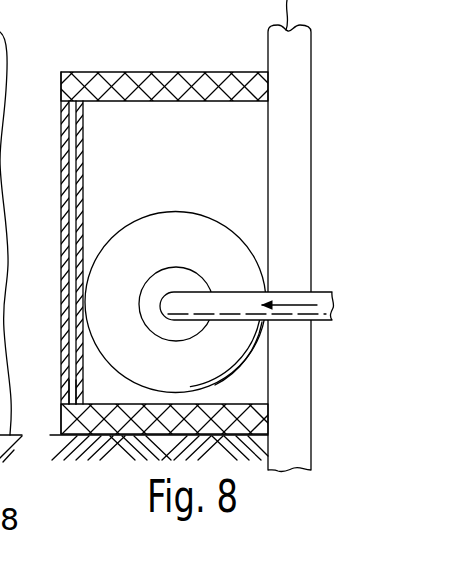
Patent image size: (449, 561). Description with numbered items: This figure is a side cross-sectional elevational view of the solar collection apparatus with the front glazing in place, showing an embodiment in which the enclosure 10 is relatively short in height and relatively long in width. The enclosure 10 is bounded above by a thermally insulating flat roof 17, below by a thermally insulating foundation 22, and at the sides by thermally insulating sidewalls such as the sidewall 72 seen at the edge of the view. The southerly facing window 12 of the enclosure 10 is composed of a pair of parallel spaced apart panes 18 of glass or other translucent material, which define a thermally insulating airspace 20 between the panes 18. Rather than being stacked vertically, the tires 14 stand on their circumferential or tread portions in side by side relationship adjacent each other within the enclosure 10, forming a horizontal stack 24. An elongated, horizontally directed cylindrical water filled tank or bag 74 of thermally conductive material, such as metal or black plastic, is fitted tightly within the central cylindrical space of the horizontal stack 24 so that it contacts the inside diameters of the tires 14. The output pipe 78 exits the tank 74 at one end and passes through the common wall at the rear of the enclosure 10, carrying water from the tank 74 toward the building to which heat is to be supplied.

The enclosure 10 is at (149, 54).
The window 12 is at (60, 275).
The tires 14 is at (184, 224).
The roof 17 is at (98, 82).
The panes 18 is at (78, 382).
The airspace 20 is at (58, 160).
The foundation 22 is at (107, 433).
The horizontal stack 24 is at (127, 218).
The sidewall 72 is at (3, 199).
The tank 74 is at (157, 284).
The output pipe 78 is at (233, 292).